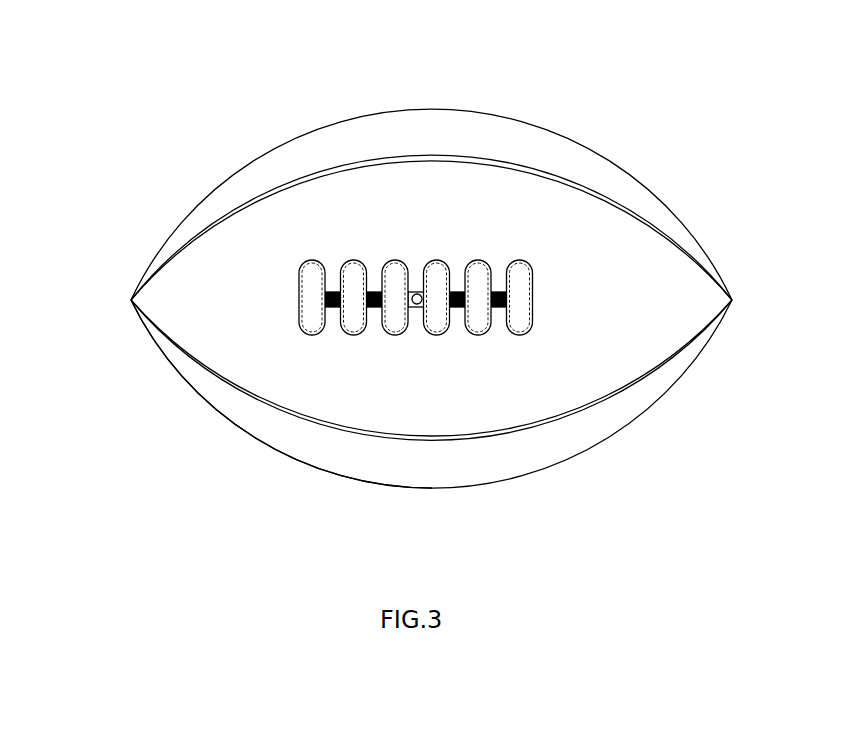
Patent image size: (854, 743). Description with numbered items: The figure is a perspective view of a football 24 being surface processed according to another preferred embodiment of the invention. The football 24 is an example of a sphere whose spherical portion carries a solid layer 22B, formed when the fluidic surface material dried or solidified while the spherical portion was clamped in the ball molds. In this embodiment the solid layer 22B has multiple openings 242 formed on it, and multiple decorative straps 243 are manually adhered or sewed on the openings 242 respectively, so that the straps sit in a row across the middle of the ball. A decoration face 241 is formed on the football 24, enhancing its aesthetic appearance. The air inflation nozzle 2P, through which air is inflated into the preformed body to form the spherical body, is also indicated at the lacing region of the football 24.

The football 24 is at (617, 120).
The decoration face 241 is at (475, 160).
The openings 242 is at (478, 265).
The decorative straps 243 is at (520, 303).
The solid layer 22B is at (212, 326).
The air inflation nozzle 2P is at (410, 298).